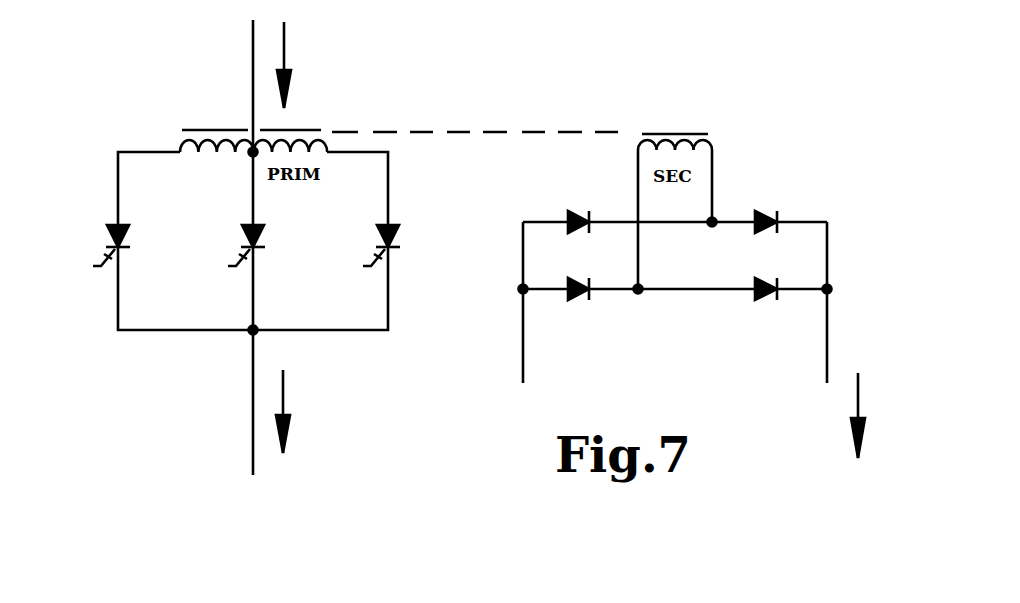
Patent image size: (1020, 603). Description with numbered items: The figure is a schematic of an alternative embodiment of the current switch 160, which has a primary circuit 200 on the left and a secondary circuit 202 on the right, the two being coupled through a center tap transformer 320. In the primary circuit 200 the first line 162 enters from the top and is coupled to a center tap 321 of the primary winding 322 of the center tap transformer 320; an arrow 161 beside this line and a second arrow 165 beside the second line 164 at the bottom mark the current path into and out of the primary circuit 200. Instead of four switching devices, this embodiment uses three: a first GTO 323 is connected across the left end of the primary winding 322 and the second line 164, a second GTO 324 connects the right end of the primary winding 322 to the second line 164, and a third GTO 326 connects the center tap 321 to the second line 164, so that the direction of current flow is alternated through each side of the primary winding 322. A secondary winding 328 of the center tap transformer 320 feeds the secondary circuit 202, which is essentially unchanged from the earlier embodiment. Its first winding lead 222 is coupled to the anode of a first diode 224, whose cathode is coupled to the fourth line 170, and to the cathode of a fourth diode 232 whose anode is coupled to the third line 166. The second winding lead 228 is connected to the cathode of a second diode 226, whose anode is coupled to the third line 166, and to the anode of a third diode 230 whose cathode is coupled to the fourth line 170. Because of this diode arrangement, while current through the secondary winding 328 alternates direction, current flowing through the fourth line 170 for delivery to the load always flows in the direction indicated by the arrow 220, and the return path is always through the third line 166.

The current switch 160 is at (553, 46).
The input current arrow 161 is at (287, 55).
The first line 162 is at (250, 50).
The second line 164 is at (250, 435).
The output current arrow 165 is at (290, 390).
The third line 166 is at (522, 360).
The fourth line 170 is at (826, 362).
The primary circuit 200 is at (142, 124).
The secondary circuit 202 is at (686, 86).
The arrow 220 is at (855, 395).
The first winding lead 222 is at (640, 266).
The first diode 224 is at (757, 300).
The second diode 226 is at (575, 210).
The second winding lead 228 is at (713, 187).
The third diode 230 is at (764, 210).
The fourth diode 232 is at (572, 300).
The center tap transformer 320 is at (634, 113).
The center tap 321 is at (251, 128).
The primary winding 322 is at (195, 150).
The first GTO 323 is at (112, 228).
The second GTO 324 is at (395, 228).
The third GTO 326 is at (260, 230).
The secondary winding 328 is at (710, 142).